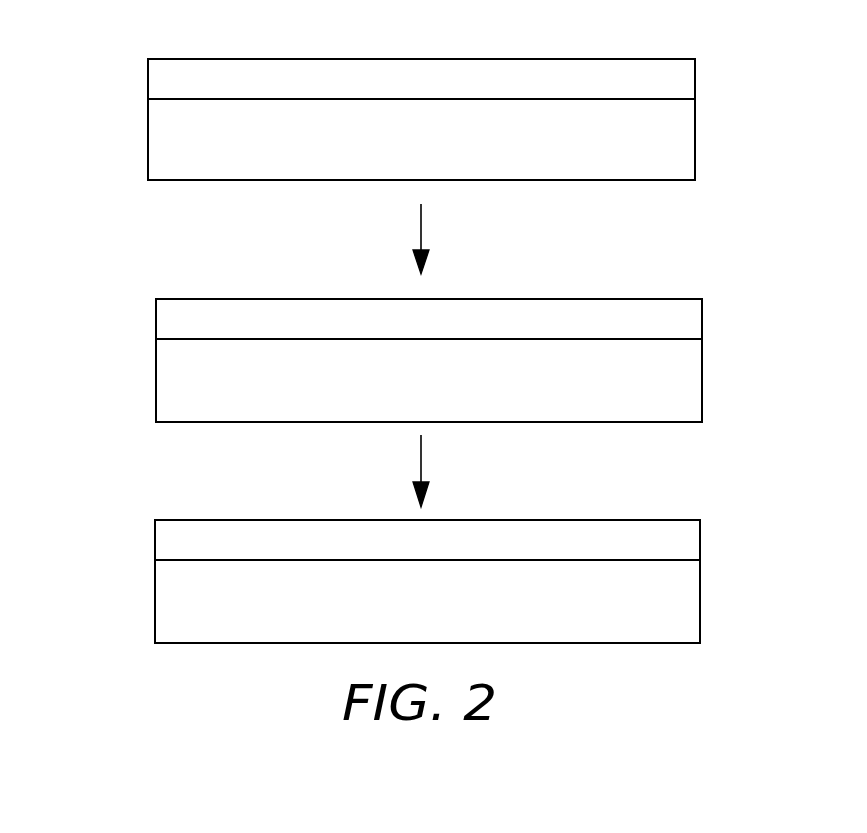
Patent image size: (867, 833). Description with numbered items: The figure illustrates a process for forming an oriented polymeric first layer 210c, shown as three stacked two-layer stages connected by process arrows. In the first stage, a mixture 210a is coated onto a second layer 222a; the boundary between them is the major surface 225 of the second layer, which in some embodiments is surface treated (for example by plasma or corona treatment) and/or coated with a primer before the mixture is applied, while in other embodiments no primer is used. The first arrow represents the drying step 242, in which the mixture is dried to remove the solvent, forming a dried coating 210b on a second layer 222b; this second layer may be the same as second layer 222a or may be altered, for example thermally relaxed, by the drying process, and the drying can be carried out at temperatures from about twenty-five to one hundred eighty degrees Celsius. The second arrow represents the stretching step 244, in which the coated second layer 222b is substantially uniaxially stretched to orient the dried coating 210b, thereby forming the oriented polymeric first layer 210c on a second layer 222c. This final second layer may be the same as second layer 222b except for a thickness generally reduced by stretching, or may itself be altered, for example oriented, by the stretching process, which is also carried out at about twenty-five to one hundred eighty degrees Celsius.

The mixture 210a is at (164, 73).
The second layer 222a is at (164, 147).
The major surface 225 is at (662, 98).
The drying step 242 is at (423, 217).
The dried coating 210b is at (164, 322).
The second layer 222b is at (164, 390).
The stretching step 244 is at (423, 452).
The oriented polymeric first layer 210c is at (164, 538).
The second layer 222c is at (164, 610).